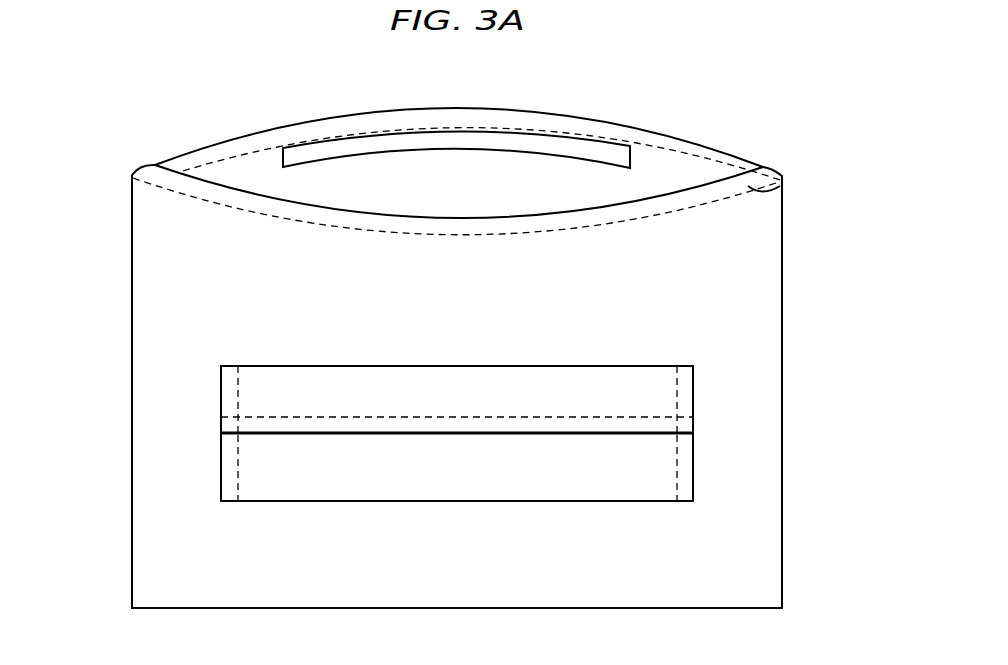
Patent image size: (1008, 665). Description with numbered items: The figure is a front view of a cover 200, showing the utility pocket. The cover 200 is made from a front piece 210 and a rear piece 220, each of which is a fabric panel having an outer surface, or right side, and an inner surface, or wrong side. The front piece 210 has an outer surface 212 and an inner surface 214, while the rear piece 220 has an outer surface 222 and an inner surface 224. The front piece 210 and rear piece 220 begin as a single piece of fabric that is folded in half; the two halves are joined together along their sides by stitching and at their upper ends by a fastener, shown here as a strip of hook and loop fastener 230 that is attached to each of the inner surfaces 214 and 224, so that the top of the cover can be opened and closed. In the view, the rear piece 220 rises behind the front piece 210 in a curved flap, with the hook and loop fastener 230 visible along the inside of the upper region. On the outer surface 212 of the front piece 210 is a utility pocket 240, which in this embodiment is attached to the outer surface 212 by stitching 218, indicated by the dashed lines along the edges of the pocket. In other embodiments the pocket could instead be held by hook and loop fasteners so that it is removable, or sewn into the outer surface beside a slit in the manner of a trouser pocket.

The cover 200 is at (445, 331).
The front piece 210 is at (728, 300).
The outer surface 212 is at (770, 343).
The inner surface 214 is at (720, 218).
The stitching 218 is at (780, 184).
The rear piece 220 is at (462, 157).
The outer surface 222 is at (232, 140).
The inner surface 224 is at (213, 174).
The hook and loop fastener 230 is at (447, 143).
The utility pocket 240 is at (637, 492).